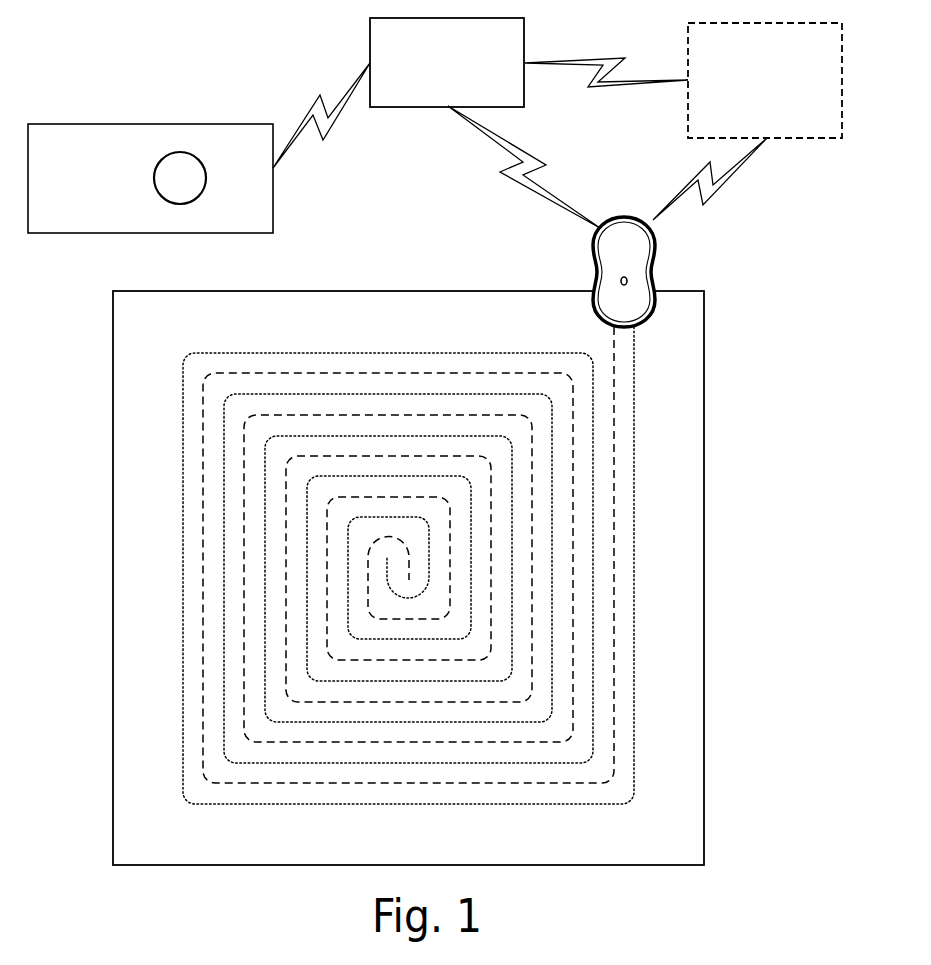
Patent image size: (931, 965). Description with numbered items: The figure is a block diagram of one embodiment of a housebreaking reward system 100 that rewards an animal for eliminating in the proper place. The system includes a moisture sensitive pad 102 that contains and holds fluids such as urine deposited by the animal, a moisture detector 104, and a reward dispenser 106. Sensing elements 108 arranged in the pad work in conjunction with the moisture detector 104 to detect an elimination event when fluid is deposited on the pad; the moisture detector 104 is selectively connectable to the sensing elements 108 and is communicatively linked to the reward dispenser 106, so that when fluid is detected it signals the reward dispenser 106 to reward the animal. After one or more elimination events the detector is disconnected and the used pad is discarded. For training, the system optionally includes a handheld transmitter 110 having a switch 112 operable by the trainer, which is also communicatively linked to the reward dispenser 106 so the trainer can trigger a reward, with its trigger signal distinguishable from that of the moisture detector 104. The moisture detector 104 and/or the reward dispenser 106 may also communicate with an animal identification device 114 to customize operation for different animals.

The housebreaking reward system 100 is at (118, 81).
The moisture sensitive pad 102 is at (690, 433).
The moisture detector 104 is at (640, 250).
The reward dispenser 106 is at (520, 103).
The sensing elements 108 is at (203, 610).
The handheld transmitter 110 is at (112, 210).
The switch 112 is at (207, 183).
The animal identification device 114 is at (837, 131).